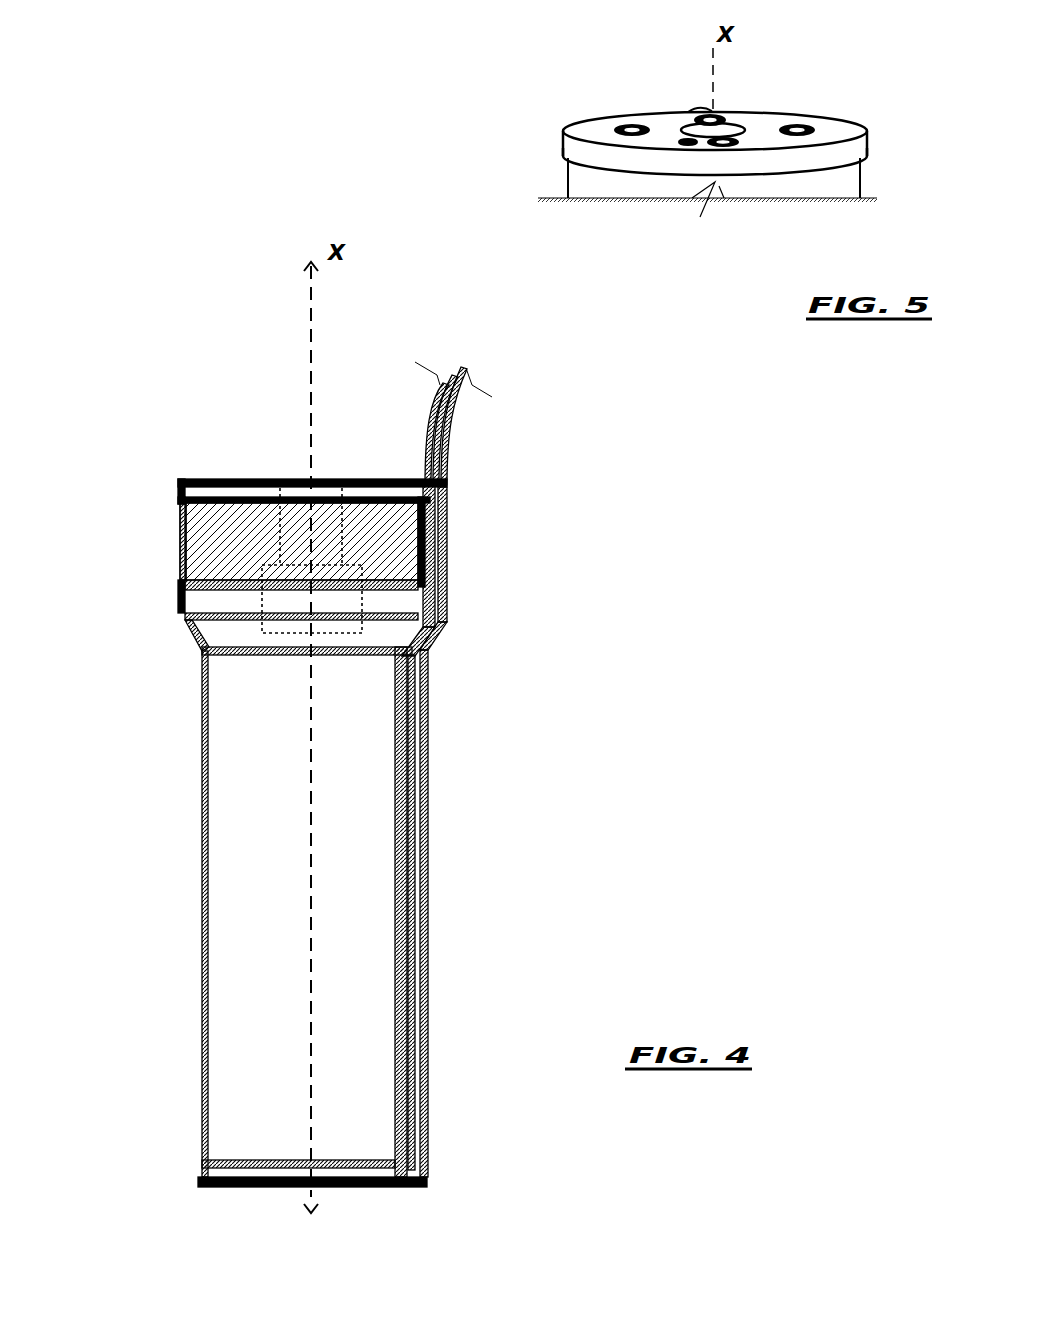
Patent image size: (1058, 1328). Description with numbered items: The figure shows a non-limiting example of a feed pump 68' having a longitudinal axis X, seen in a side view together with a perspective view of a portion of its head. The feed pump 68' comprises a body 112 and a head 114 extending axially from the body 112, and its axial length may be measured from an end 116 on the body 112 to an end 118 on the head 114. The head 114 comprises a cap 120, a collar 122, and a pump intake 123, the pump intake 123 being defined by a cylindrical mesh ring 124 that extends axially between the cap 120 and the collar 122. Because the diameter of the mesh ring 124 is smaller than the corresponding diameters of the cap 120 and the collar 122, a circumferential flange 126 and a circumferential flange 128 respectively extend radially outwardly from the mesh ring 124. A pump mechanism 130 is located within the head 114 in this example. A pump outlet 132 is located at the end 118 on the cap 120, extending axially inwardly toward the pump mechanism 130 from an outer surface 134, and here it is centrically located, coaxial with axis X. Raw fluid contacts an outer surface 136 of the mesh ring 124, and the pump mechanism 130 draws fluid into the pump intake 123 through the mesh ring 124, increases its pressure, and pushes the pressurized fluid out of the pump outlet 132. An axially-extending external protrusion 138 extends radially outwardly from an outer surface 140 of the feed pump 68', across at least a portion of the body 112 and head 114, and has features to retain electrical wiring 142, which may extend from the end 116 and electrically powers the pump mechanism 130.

In FIG. 4, the feed pump 68' is at (362, 787).
In FIG. 4, the body 112 is at (390, 816).
In FIG. 4, the head 114 is at (460, 541).
In FIG. 4, the end 116 is at (402, 1187).
In FIG. 4, the end 118 is at (231, 480).
In FIG. 5, the end 118 is at (847, 132).
In FIG. 4, the cap 120 is at (178, 481).
In FIG. 5, the cap 120 is at (572, 148).
In FIG. 4, the collar 122 is at (182, 597).
In FIG. 4, the pump intake 123 is at (172, 523).
In FIG. 5, the pump intake 123 is at (874, 182).
In FIG. 4, the cylindrical mesh ring 124 is at (213, 547).
In FIG. 5, the cylindrical mesh ring 124 is at (593, 182).
In FIG. 4, the circumferential flange 126 is at (178, 504).
In FIG. 5, the circumferential flange 126 is at (862, 167).
In FIG. 4, the circumferential flange 128 is at (183, 583).
In FIG. 4, the pump mechanism 130 is at (250, 643).
In FIG. 5, the pump outlet 132 is at (733, 124).
In FIG. 4, the outer surface 134 is at (198, 480).
In FIG. 5, the outer surface 134 is at (827, 129).
In FIG. 4, the outer surface 136 is at (180, 540).
In FIG. 5, the outer surface 136 is at (572, 167).
In FIG. 4, the external protrusion 138 is at (426, 970).
In FIG. 5, the external protrusion 138 is at (702, 109).
In FIG. 4, the outer surface 140 is at (218, 988).
In FIG. 4, the electrical wiring 142 is at (435, 437).